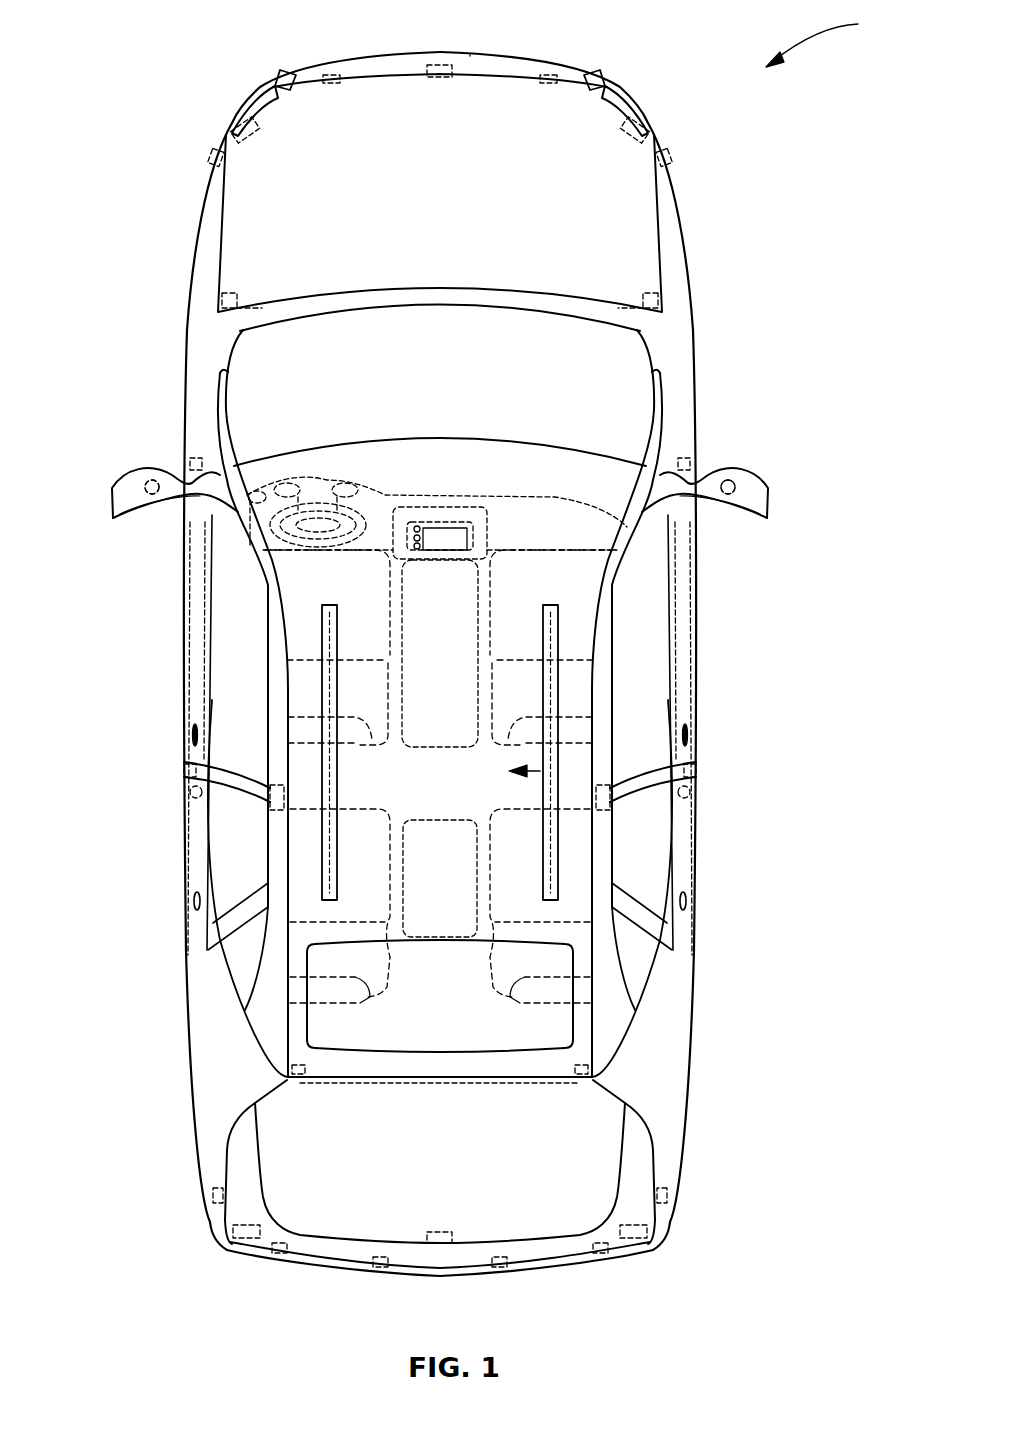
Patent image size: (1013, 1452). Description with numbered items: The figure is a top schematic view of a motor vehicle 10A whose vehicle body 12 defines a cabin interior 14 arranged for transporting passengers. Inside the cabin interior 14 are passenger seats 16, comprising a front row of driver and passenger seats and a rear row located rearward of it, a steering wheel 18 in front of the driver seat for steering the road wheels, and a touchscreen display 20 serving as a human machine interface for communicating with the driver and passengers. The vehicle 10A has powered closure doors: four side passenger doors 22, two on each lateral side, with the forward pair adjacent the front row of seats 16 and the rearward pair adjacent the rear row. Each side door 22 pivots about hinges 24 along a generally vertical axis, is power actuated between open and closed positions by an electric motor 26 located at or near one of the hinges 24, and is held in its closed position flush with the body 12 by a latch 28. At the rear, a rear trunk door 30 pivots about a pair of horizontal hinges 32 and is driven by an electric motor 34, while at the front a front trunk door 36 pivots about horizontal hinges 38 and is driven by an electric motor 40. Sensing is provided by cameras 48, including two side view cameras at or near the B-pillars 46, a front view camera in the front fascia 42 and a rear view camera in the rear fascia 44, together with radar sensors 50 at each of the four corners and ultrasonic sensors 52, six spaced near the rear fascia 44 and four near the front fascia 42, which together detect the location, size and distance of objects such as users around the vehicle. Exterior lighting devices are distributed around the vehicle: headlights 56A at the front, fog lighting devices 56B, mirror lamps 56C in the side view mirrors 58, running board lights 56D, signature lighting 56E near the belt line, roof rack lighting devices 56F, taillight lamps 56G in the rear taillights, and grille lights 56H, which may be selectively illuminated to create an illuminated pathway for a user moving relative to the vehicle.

The motor vehicle 10A is at (835, 36).
The vehicle body 12 is at (210, 993).
The cabin interior 14 is at (542, 771).
The passenger seats 16 is at (305, 591).
The steering wheel 18 is at (263, 497).
The touchscreen display 20 is at (490, 545).
The side passenger doors 22 is at (197, 520).
The hinges 24 is at (195, 455).
The electric motor 26 is at (188, 462).
The latch 28 is at (188, 772).
The rear trunk door 30 is at (513, 1153).
The horizontal hinges 32 is at (285, 1098).
The electric motor 34 is at (600, 1068).
The front trunk door 36 is at (540, 203).
The horizontal hinges 38 is at (228, 310).
The electric motor 40 is at (655, 298).
The front fascia 42 is at (330, 60).
The rear fascia 44 is at (325, 1262).
The B-pillars 46 is at (247, 800).
The cameras 48 is at (437, 78).
The radar sensors 50 is at (226, 120).
The ultrasonic sensors 52 is at (208, 158).
The headlights 56A is at (260, 93).
The fog lighting devices 56B is at (290, 70).
The mirror lamps 56C is at (145, 485).
The running board lights 56D is at (200, 585).
The signature lighting 56E is at (203, 613).
The roof rack lighting devices 56F is at (325, 632).
The taillight lamps 56G is at (215, 1247).
The grille lights 56H is at (470, 55).
The side view mirrors 58 is at (112, 495).